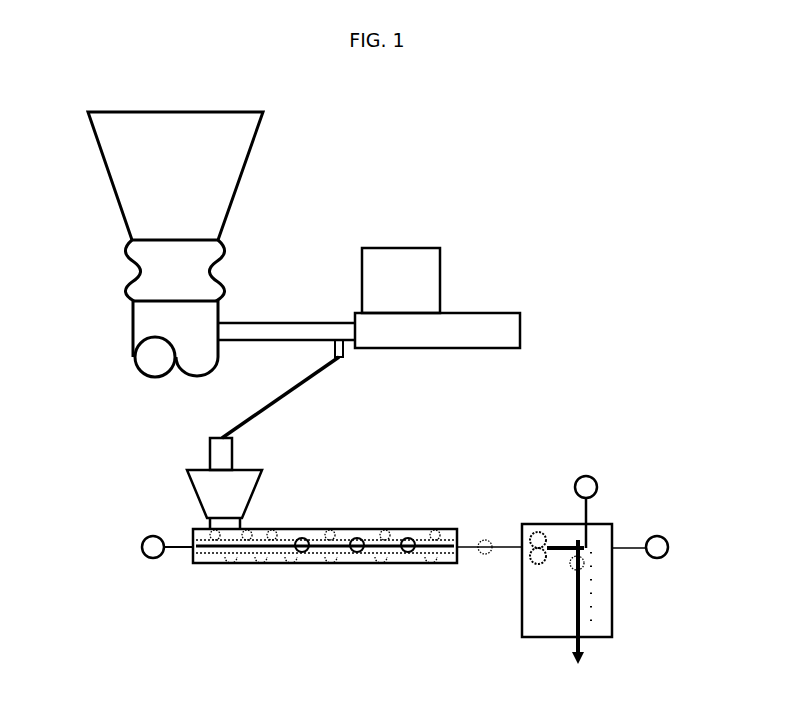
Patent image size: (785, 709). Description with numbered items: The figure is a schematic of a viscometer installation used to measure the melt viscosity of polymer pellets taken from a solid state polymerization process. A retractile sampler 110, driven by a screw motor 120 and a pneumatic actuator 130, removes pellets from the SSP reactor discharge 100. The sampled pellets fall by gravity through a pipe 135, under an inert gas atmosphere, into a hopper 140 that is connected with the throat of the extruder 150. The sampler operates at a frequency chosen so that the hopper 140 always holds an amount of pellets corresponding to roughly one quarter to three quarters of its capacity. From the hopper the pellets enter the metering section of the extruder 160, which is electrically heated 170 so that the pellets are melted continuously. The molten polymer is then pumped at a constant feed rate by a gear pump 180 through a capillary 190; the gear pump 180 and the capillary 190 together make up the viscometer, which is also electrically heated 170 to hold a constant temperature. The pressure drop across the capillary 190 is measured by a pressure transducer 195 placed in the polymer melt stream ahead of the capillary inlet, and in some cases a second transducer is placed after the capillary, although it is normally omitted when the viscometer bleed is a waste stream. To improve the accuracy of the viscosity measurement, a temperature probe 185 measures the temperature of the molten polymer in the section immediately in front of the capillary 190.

The SSP reactor discharge 100 is at (168, 213).
The retractile sampler 110 is at (290, 337).
The screw motor 120 is at (395, 265).
The pneumatic actuator 130 is at (500, 335).
The pipe 135 is at (308, 378).
The hopper 140 is at (218, 497).
The extruder throat 150 is at (247, 517).
The extruder 160 is at (412, 527).
The electrical heating 170 is at (569, 568).
The gear pump 180 is at (538, 527).
The temperature probe 185 is at (664, 536).
The capillary 190 is at (589, 583).
The pressure transducer 195 is at (596, 476).